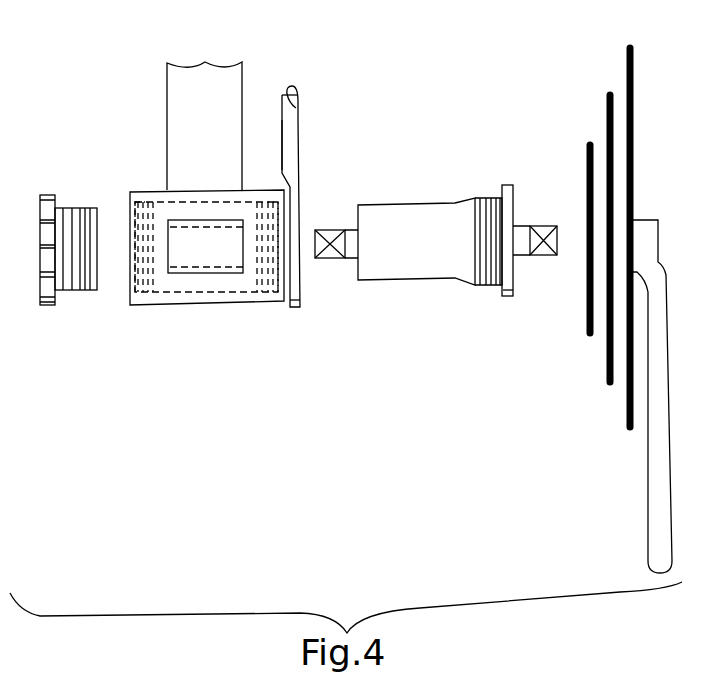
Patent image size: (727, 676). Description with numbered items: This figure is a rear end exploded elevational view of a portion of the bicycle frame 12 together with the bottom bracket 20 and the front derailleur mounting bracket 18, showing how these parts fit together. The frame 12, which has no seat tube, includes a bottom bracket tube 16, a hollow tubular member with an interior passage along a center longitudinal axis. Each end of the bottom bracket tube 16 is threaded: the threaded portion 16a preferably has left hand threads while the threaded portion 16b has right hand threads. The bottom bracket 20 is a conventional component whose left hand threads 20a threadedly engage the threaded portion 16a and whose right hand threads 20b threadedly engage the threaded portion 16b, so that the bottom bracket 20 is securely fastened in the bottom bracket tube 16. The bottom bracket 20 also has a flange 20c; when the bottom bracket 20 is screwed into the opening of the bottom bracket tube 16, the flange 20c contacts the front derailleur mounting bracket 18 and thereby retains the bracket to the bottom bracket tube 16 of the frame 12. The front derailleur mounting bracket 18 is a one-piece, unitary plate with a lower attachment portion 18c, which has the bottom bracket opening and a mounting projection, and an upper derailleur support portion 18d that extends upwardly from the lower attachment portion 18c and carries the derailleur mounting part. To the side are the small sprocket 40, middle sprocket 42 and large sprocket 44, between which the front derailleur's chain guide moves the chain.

The frame 12 is at (243, 82).
The bottom bracket tube 16 is at (188, 307).
The threaded portion 16a is at (272, 305).
The threaded portion 16b is at (132, 305).
The front derailleur mounting bracket 18 is at (298, 140).
The lower attachment portion 18c is at (297, 302).
The upper derailleur support portion 18d is at (290, 160).
The bottom bracket 20 is at (427, 202).
The left hand threads 20a is at (482, 197).
The right hand threads 20b is at (57, 210).
The flange 20c is at (507, 298).
The small sprocket 40 is at (585, 170).
The middle sprocket 42 is at (605, 127).
The large sprocket 44 is at (622, 75).